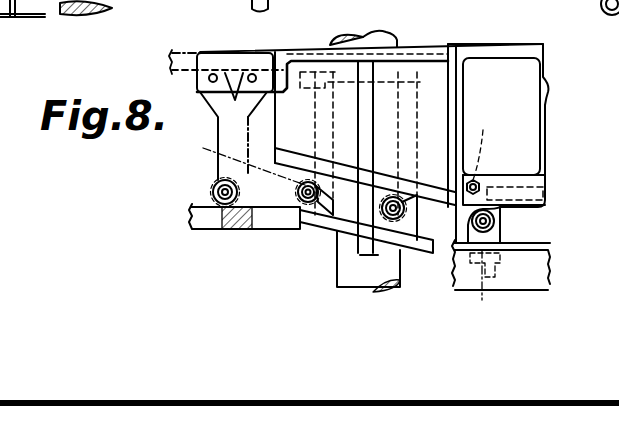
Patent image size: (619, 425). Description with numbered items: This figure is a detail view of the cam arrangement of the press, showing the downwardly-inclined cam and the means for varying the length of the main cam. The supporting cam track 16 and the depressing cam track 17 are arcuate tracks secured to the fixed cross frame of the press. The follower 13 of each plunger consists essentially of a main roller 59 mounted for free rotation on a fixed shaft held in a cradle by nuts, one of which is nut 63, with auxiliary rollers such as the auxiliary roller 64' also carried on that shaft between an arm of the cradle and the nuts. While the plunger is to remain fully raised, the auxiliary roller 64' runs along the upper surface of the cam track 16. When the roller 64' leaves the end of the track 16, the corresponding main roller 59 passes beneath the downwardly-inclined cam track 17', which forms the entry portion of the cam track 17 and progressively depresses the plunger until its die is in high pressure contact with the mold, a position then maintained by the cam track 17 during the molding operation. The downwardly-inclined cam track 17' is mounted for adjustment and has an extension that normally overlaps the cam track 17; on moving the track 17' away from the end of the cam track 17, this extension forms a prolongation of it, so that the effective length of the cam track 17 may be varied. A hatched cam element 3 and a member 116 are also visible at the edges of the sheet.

The cam 3 is at (398, 32).
The member 116 is at (593, 46).
The cam track 17 is at (525, 125).
The downwardly-inclined cam track 17' is at (491, 138).
The nut 63 is at (500, 205).
The main roller 59 is at (500, 218).
The follower 13 is at (507, 242).
The auxiliary roller 64' is at (333, 238).
The cam track 16 is at (200, 232).